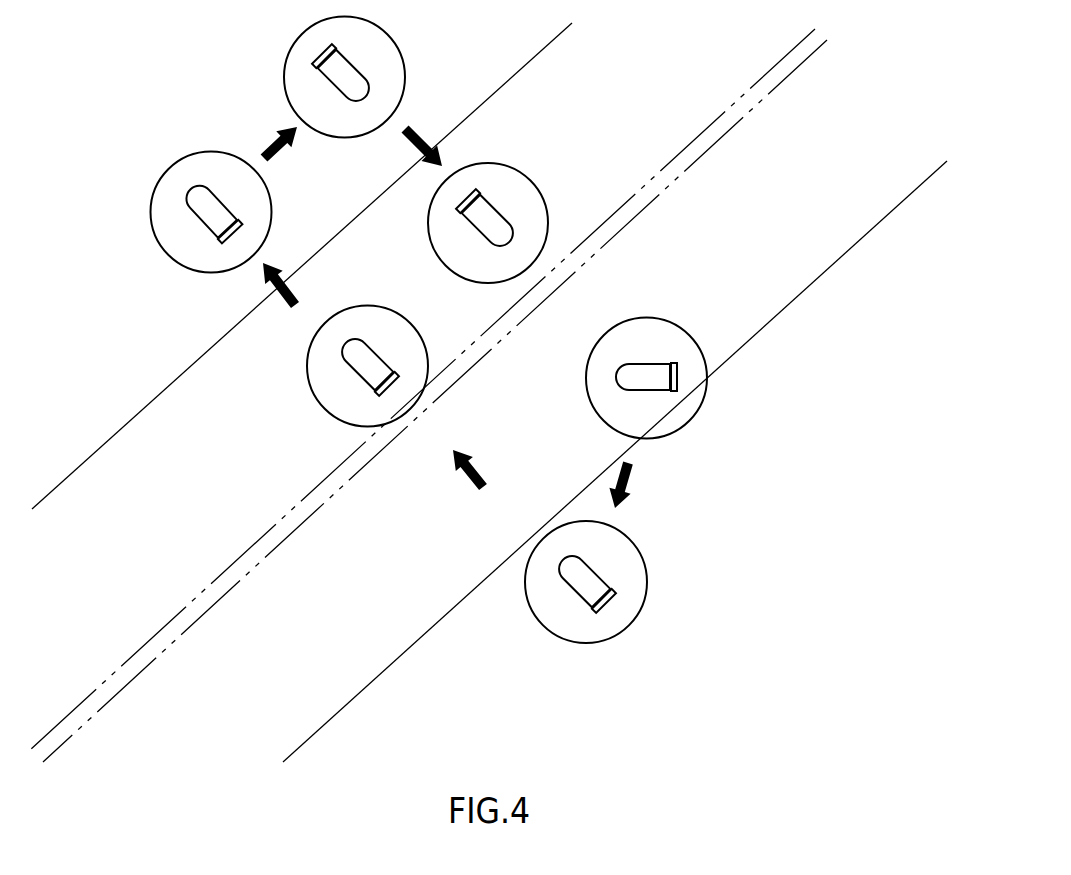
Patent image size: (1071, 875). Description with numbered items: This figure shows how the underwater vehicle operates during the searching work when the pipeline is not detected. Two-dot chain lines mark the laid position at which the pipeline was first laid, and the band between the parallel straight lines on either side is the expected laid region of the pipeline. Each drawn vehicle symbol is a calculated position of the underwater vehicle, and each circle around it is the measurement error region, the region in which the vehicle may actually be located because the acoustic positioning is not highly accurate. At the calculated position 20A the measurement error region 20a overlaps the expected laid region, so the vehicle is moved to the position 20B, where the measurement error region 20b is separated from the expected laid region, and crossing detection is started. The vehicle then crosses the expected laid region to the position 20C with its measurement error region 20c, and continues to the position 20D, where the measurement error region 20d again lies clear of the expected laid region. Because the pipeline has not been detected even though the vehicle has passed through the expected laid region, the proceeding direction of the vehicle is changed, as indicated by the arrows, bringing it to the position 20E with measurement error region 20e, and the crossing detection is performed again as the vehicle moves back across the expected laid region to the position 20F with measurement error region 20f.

The underwater vehicle position 20A is at (679, 364).
The underwater vehicle position 20B is at (580, 600).
The underwater vehicle position 20C is at (350, 372).
The underwater vehicle position 20D is at (198, 217).
The underwater vehicle position 20E is at (317, 68).
The underwater vehicle position 20F is at (500, 208).
The measurement error region 20a is at (665, 319).
The measurement error region 20b is at (531, 615).
The measurement error region 20c is at (330, 421).
The measurement error region 20d is at (176, 263).
The measurement error region 20e is at (280, 88).
The measurement error region 20f is at (494, 163).